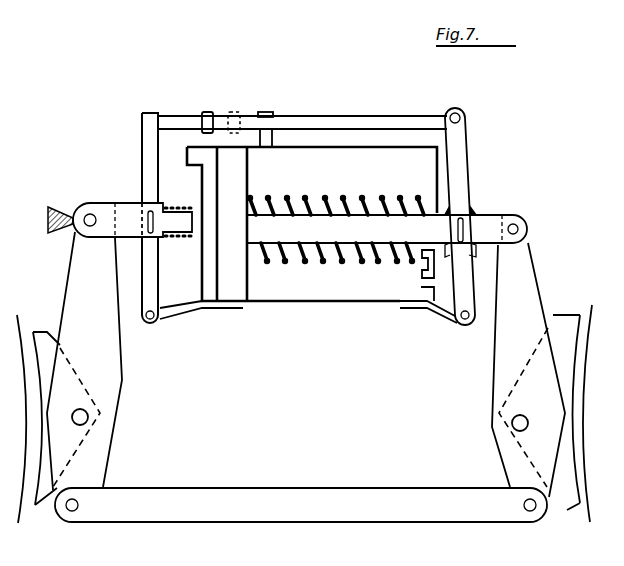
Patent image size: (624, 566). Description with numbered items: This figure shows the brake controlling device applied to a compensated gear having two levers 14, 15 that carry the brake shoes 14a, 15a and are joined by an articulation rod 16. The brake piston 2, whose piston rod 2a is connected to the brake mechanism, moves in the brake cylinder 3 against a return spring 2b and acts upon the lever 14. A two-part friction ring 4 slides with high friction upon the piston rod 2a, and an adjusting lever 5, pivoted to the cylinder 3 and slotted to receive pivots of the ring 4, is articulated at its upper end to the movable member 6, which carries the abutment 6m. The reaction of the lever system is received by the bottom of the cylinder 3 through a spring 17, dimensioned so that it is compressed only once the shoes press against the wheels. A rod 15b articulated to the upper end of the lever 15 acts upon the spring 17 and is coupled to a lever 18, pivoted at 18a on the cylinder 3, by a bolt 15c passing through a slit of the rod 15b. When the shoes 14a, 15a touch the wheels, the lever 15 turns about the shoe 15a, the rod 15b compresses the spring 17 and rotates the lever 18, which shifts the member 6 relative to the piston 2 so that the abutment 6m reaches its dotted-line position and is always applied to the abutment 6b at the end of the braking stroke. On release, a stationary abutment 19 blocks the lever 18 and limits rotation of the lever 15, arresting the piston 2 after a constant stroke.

The brake piston 2 is at (241, 292).
The piston rod 2a is at (297, 237).
The return spring 2b is at (378, 267).
The brake cylinder 3 is at (328, 303).
The friction ring 4 is at (481, 208).
The adjusting lever 5 is at (458, 175).
The movable member 6 is at (423, 110).
The abutment 6m is at (209, 112).
The abutment 6b is at (268, 112).
The lever 14 is at (495, 368).
The brake shoe 14a is at (566, 325).
The lever 15 is at (108, 408).
The brake shoe 15a is at (43, 331).
The rod 15b is at (125, 206).
The bolt 15c is at (146, 206).
The articulation rod 16 is at (373, 480).
The spring 17 is at (185, 236).
The lever 18 is at (148, 113).
The pivot 18a is at (150, 323).
The stationary abutment 19 is at (52, 233).